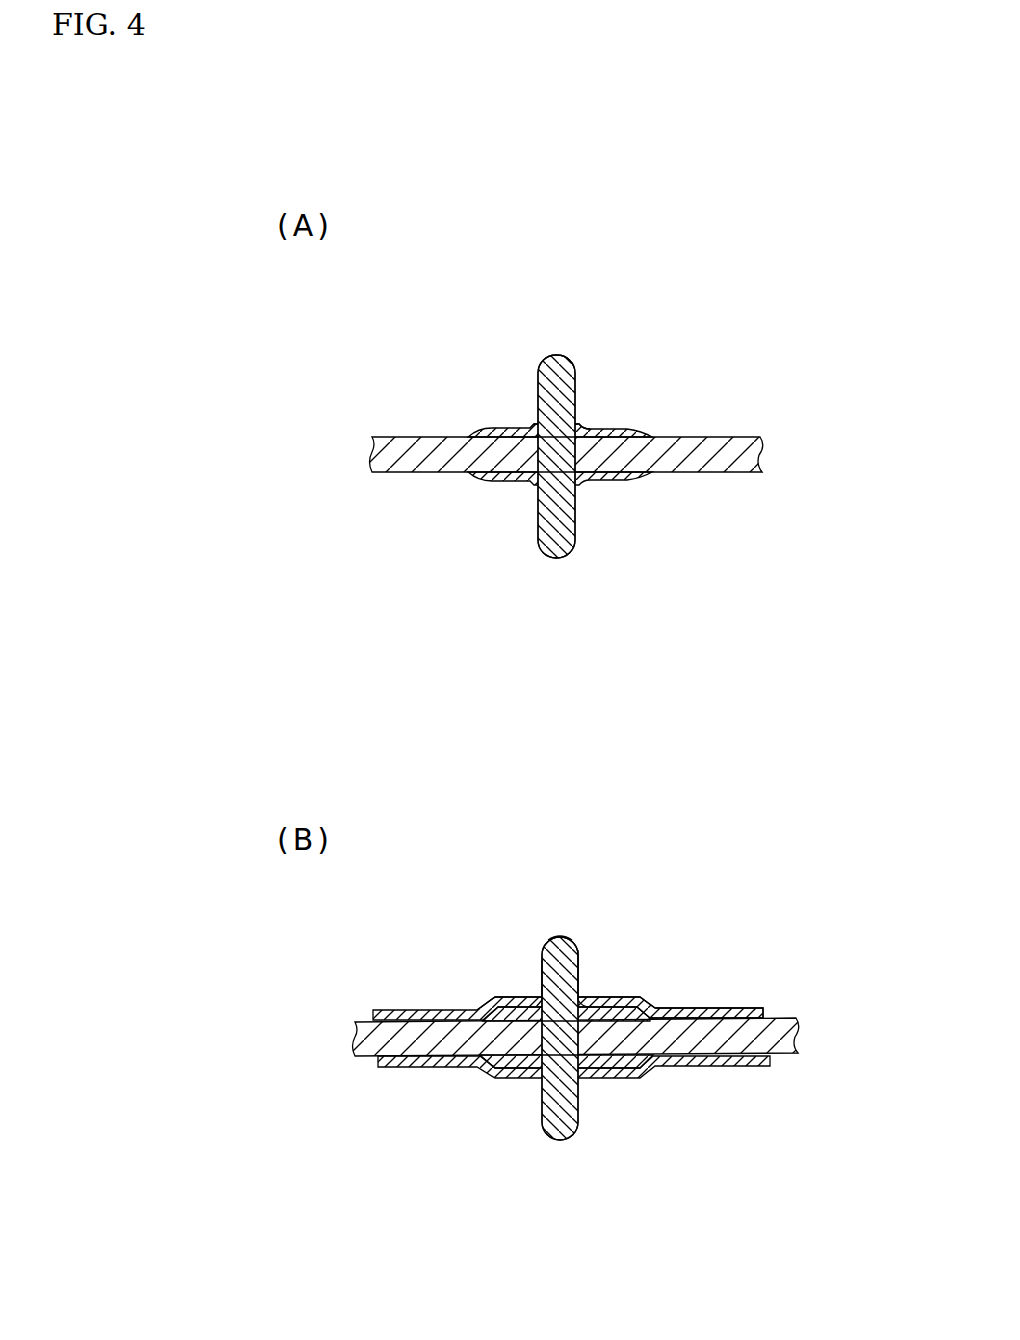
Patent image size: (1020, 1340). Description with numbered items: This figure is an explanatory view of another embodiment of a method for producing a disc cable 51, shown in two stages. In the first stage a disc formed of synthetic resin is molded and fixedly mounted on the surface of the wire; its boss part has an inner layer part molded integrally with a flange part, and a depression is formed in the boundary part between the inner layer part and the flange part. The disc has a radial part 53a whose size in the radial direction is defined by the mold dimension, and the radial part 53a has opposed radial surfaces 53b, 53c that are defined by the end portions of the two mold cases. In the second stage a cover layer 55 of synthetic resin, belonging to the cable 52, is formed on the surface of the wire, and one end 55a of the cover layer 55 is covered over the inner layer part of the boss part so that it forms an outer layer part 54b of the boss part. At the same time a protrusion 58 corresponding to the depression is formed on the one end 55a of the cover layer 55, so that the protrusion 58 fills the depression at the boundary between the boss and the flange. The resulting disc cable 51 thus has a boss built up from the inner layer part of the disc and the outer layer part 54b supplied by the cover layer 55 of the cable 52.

The disc cable 51 is at (575, 964).
The cable 52 is at (380, 1013).
The radial part 53a is at (558, 937).
The radial surface 53b is at (541, 960).
The radial surface 53c is at (580, 945).
The outer layer part 54b is at (513, 995).
The cover layer 55 is at (740, 1010).
The one end of cover layer 55a is at (617, 994).
The protrusion 58 is at (593, 1080).